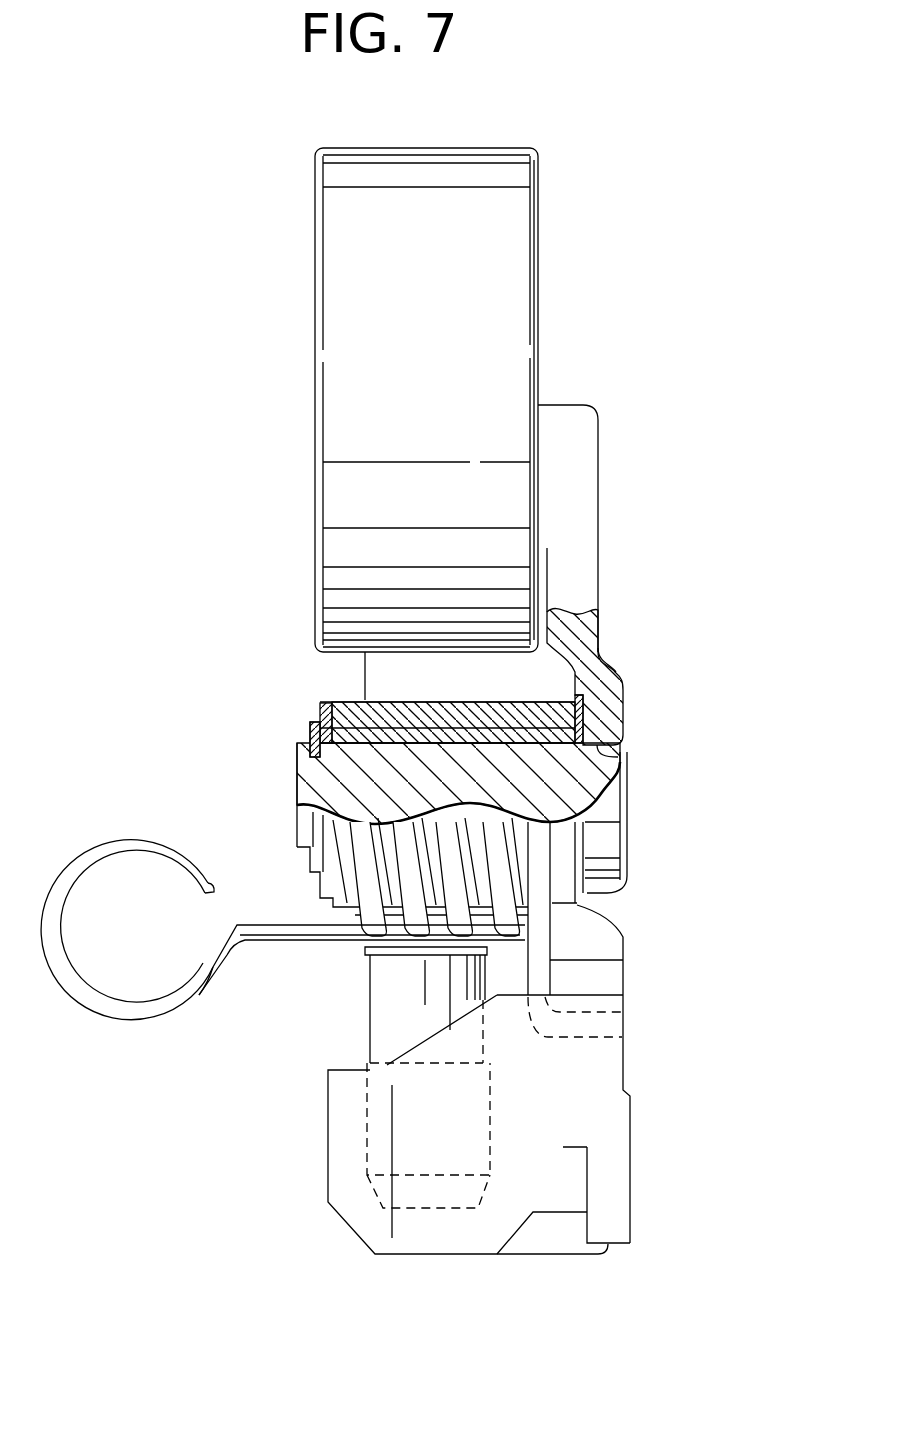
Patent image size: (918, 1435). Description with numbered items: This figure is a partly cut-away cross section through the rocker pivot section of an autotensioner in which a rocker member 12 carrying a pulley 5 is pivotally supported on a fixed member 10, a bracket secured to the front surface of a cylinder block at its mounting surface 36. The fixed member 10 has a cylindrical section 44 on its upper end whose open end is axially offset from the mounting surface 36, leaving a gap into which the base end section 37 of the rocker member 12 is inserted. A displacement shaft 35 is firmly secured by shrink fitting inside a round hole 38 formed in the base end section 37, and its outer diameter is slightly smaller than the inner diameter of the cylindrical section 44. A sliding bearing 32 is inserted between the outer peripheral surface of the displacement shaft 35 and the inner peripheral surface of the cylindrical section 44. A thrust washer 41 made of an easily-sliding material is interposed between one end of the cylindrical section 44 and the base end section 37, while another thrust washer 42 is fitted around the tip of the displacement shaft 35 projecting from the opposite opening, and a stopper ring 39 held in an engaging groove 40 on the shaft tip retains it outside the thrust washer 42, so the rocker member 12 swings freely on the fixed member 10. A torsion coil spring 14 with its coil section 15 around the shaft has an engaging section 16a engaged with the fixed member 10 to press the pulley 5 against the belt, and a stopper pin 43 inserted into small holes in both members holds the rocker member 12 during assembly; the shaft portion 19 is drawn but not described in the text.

The pulley 5 is at (516, 216).
The fixed member 10 is at (458, 1256).
The rocker member 12 is at (680, 561).
The torsion coil spring 14 is at (352, 832).
The coil section 15 is at (455, 880).
The engaging section 16a is at (617, 1026).
The shaft 19 is at (367, 1019).
The sliding bearing 32 is at (323, 773).
The displacement shaft 35 is at (592, 778).
The mounting surface 36 is at (630, 1098).
The base end section 37 is at (614, 715).
The round hole 38 is at (612, 750).
The stopper ring 39 is at (313, 865).
The engaging groove 40 is at (312, 732).
The thrust washer 41 is at (619, 684).
The thrust washer 42 is at (325, 712).
The stopper pin 43 is at (180, 1002).
The cylindrical section 44 is at (600, 654).